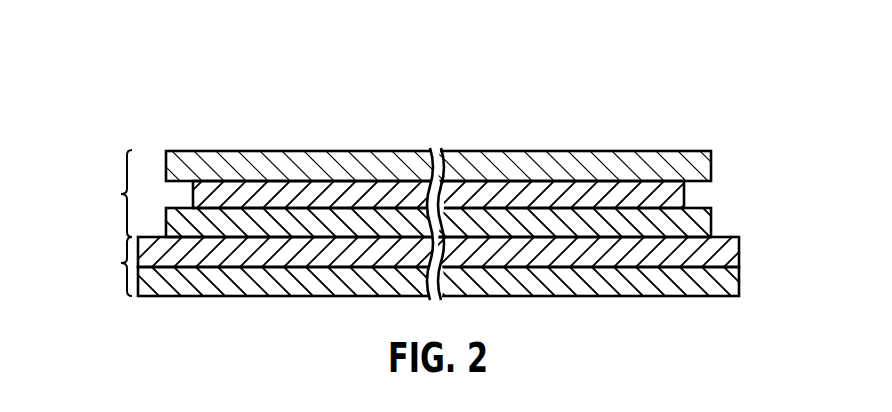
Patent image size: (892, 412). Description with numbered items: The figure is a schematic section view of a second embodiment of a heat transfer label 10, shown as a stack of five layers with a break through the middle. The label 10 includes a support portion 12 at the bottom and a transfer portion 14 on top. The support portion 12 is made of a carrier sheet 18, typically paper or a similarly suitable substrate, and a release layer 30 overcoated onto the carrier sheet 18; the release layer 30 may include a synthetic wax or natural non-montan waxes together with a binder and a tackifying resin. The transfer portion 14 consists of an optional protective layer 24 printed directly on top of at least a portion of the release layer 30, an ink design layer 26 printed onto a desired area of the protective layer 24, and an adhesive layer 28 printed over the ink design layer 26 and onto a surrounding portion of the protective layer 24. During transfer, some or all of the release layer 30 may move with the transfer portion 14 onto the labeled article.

The heat transfer label 10 is at (276, 70).
The support portion 12 is at (121, 263).
The transfer portion 14 is at (121, 193).
The carrier sheet 18 is at (739, 283).
The protective layer 24 is at (711, 222).
The ink design layer 26 is at (684, 190).
The adhesive layer 28 is at (711, 165).
The release layer 30 is at (739, 252).